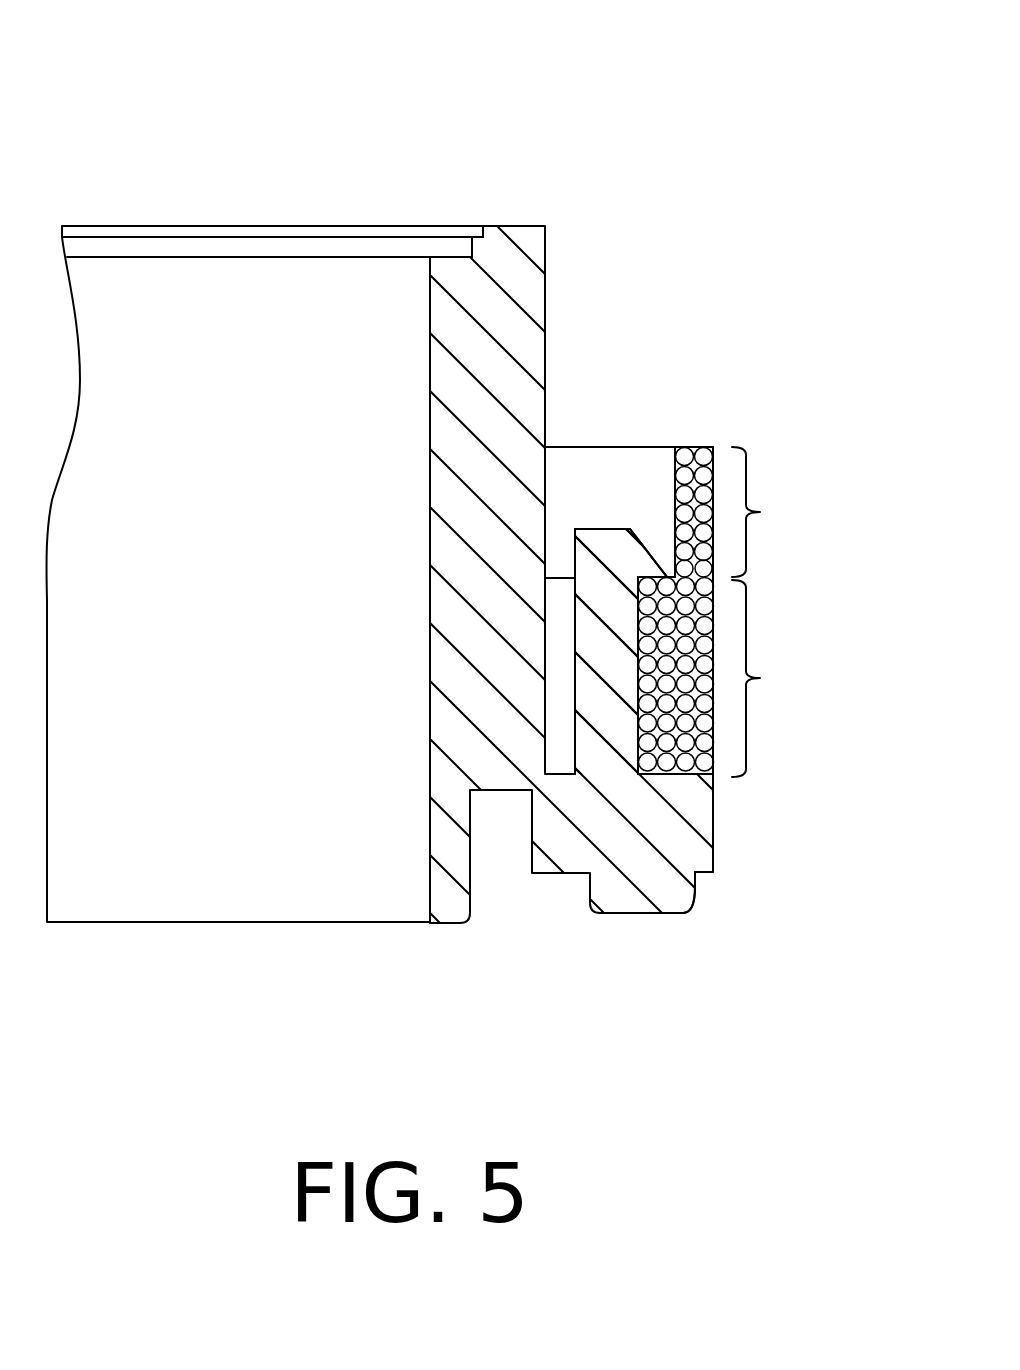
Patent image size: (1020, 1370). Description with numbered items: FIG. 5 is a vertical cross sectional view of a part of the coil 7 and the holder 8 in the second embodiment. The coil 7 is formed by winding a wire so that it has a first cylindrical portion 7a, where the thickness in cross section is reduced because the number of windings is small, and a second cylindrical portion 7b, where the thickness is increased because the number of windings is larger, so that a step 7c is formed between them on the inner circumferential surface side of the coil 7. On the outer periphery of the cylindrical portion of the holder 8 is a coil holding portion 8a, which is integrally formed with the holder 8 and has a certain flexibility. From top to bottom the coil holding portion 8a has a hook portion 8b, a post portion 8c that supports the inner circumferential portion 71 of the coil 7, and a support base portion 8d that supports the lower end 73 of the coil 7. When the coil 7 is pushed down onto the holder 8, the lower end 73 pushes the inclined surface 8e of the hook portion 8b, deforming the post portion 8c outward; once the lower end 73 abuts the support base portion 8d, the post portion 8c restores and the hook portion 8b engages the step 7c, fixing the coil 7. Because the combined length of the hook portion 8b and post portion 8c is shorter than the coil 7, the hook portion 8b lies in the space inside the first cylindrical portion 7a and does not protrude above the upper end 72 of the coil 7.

The coil 7 is at (566, 647).
The first cylindrical portion 7a is at (774, 512).
The second cylindrical portion 7b is at (774, 678).
The step 7c is at (448, 539).
The holder 8 is at (305, 227).
The coil holding portion 8a is at (608, 490).
The hook portion 8b is at (431, 445).
The post portion 8c is at (415, 651).
The support base portion 8d is at (753, 863).
The inclined surface 8e is at (641, 577).
The inner circumferential portion 71 is at (496, 647).
The upper end 72 is at (700, 447).
The lower end 73 is at (769, 826).